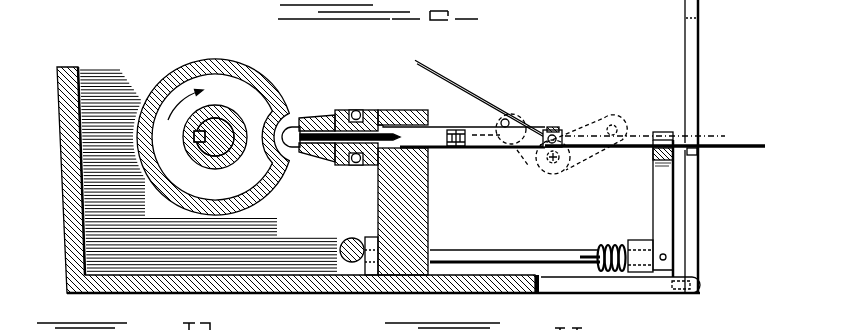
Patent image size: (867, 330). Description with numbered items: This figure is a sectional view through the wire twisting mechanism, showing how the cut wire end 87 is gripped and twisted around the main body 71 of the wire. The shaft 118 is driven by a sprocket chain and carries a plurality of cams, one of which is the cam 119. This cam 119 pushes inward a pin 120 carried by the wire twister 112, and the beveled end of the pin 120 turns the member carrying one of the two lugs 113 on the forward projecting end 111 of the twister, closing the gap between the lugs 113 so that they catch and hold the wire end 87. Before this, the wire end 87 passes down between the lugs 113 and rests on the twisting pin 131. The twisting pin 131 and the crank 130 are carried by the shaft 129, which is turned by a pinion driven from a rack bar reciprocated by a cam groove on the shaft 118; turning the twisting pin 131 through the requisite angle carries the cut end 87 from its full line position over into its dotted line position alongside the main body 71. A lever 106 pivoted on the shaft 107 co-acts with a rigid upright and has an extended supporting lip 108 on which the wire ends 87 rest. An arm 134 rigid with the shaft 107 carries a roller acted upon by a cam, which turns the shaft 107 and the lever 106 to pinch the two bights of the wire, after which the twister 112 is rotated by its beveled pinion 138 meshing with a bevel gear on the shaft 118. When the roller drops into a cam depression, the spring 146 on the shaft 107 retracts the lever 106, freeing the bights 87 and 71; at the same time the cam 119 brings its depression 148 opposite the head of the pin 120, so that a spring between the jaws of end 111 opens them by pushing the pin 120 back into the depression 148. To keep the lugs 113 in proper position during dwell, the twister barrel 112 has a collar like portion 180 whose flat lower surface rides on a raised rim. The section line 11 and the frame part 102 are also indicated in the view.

The section line 11- 11 is at (681, 128).
The main body of the wire 71 is at (742, 143).
The wire end 87 is at (471, 92).
The frame wall 102 is at (692, 51).
The lever 106 is at (668, 218).
The shaft 107 is at (490, 251).
The extended supporting lip 108 is at (655, 160).
The forward projecting end of the wire twister 111 is at (550, 128).
The wire twister 112 is at (455, 150).
The lugs 113 is at (562, 131).
The shaft 118 is at (218, 147).
The cam 119 is at (280, 104).
The pin 120 is at (362, 133).
The shaft 129 is at (553, 175).
The crank 130 is at (522, 156).
The twisting pin 131 is at (507, 119).
The arm 134 is at (352, 240).
The beveled pinion 138 is at (315, 163).
The spring 146 is at (606, 240).
The depression 148 is at (300, 120).
The collar like portion 180 is at (347, 166).